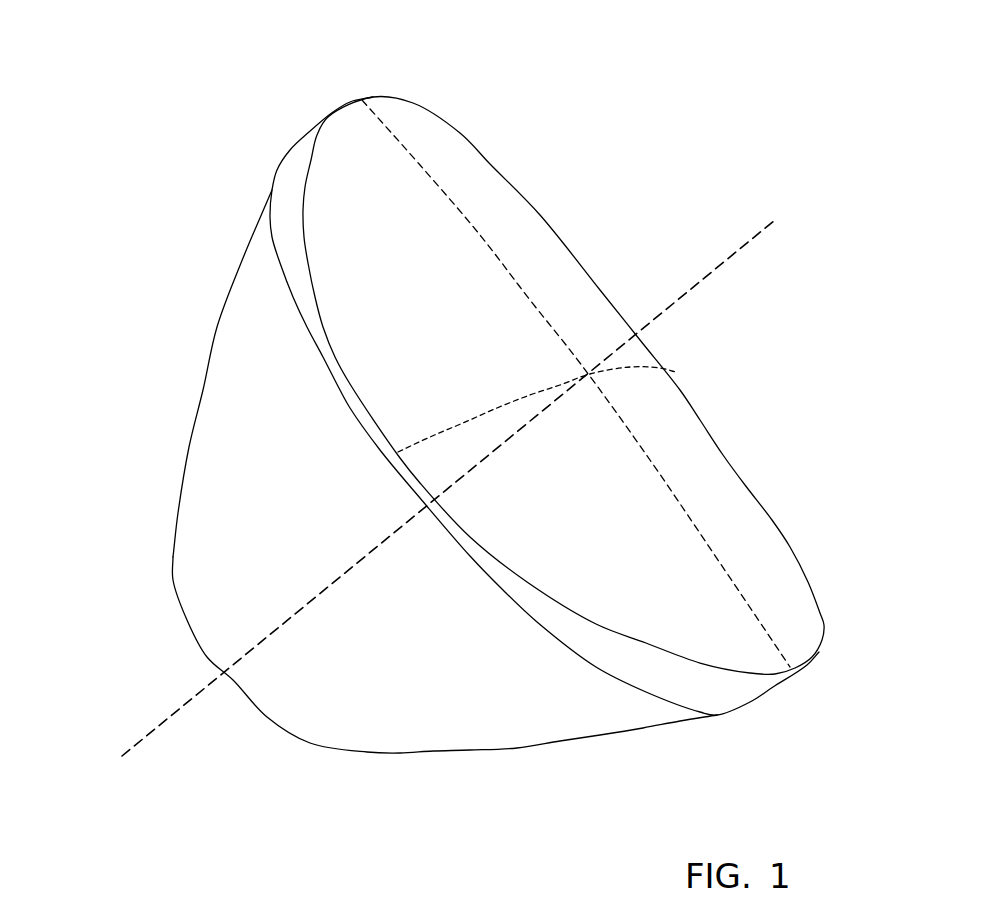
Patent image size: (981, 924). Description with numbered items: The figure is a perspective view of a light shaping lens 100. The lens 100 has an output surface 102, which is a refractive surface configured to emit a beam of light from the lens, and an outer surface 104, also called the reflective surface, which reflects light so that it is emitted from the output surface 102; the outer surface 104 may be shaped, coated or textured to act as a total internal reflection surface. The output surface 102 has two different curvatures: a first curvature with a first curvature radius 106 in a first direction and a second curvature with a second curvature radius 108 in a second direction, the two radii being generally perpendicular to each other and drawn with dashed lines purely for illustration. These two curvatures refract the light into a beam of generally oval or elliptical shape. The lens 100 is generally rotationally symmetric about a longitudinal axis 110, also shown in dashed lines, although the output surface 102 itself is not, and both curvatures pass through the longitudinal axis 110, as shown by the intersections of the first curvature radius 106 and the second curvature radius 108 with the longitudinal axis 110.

The light shaping lens 100 is at (146, 346).
The output surface 102 is at (727, 503).
The outer surface 104 is at (465, 697).
The first curvature radius 106 is at (397, 132).
The second curvature radius 108 is at (478, 413).
The longitudinal axis 110 is at (740, 248).